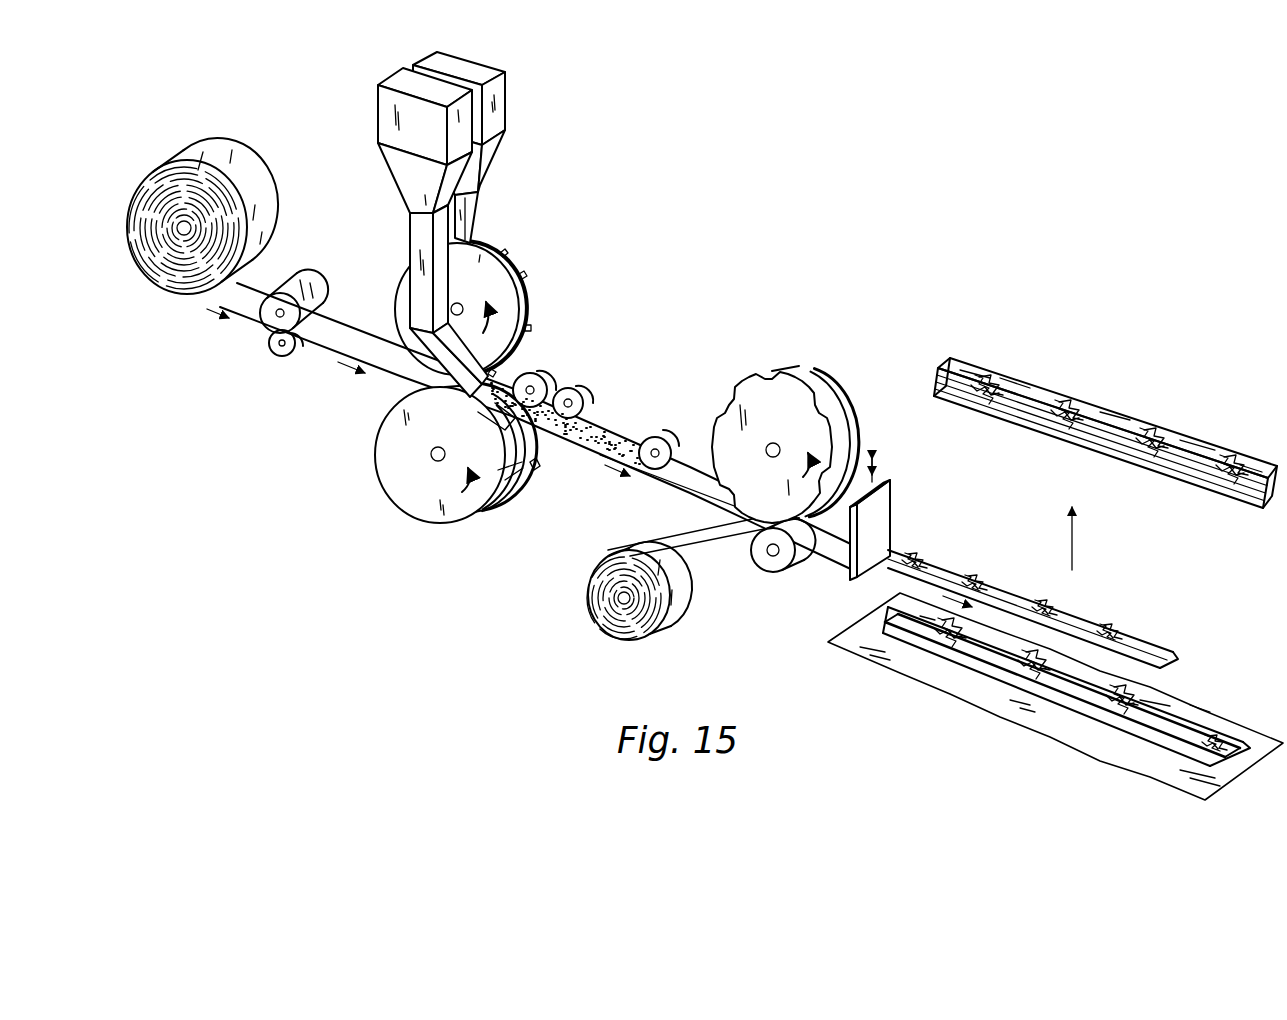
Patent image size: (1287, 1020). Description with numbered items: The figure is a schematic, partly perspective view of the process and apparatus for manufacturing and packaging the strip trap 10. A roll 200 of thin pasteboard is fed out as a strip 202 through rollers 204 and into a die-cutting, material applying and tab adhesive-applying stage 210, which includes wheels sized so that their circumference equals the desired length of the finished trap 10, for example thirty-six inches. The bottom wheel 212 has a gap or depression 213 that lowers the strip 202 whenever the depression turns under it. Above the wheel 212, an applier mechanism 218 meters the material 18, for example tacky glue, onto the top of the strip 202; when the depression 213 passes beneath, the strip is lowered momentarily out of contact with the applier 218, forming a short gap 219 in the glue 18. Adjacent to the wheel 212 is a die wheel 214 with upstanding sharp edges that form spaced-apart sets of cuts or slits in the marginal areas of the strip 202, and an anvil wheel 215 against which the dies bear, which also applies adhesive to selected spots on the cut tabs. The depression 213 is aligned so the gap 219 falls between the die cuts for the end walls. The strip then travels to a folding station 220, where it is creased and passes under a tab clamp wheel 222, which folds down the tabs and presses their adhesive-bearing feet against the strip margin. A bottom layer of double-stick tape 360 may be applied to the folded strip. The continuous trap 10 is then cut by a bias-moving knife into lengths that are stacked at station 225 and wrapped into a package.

The roll 200 is at (238, 170).
The strip 202 is at (252, 297).
The rollers 204 is at (273, 347).
The applier mechanism 218 is at (402, 173).
The anvil wheel 215 is at (523, 317).
The gap 219 is at (497, 393).
The material 18 is at (550, 420).
The folding station 220 is at (682, 372).
The tab clamp wheel 222 is at (823, 397).
The bottom wheel 212 is at (392, 453).
The gap or depression 213 is at (520, 432).
The die wheel 214 is at (536, 472).
The die-cutting, material applying and tab adhesive-applying stage 210 is at (475, 532).
The double-stick tape 360 is at (678, 533).
The trap 10 is at (957, 573).
The station 225 is at (936, 706).